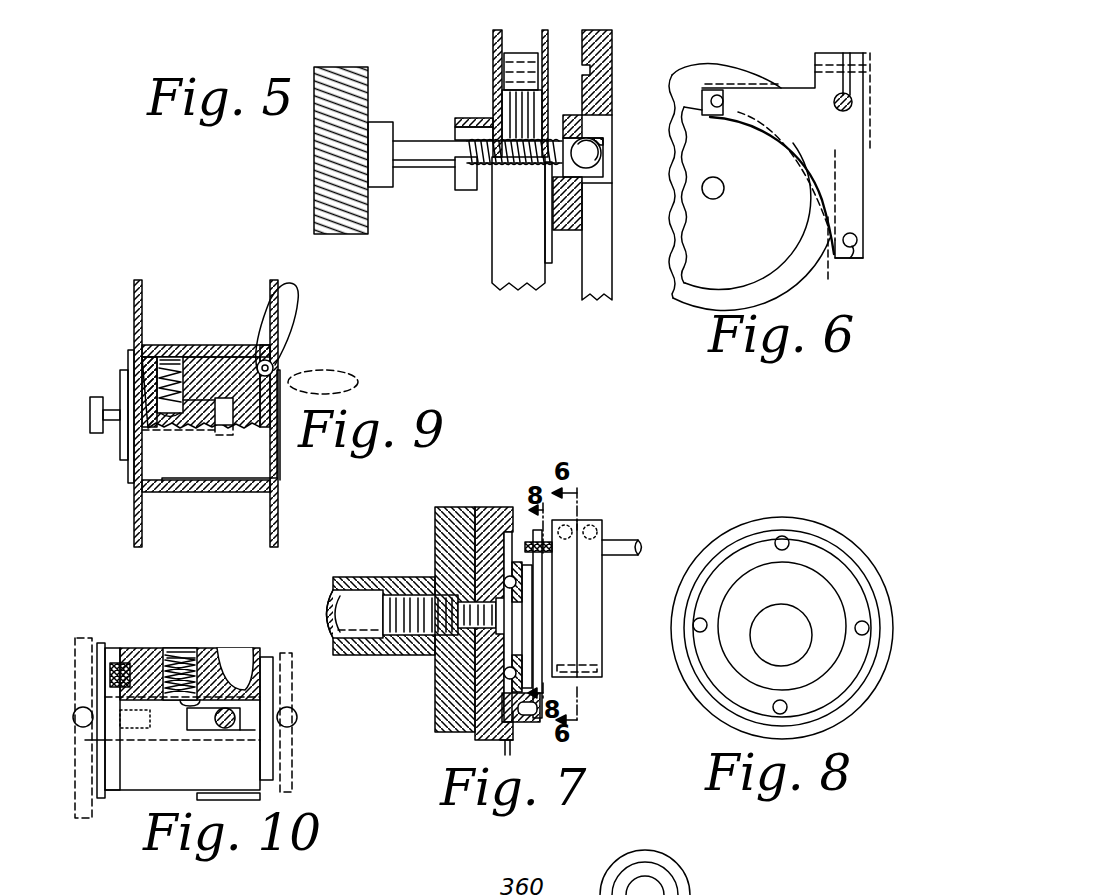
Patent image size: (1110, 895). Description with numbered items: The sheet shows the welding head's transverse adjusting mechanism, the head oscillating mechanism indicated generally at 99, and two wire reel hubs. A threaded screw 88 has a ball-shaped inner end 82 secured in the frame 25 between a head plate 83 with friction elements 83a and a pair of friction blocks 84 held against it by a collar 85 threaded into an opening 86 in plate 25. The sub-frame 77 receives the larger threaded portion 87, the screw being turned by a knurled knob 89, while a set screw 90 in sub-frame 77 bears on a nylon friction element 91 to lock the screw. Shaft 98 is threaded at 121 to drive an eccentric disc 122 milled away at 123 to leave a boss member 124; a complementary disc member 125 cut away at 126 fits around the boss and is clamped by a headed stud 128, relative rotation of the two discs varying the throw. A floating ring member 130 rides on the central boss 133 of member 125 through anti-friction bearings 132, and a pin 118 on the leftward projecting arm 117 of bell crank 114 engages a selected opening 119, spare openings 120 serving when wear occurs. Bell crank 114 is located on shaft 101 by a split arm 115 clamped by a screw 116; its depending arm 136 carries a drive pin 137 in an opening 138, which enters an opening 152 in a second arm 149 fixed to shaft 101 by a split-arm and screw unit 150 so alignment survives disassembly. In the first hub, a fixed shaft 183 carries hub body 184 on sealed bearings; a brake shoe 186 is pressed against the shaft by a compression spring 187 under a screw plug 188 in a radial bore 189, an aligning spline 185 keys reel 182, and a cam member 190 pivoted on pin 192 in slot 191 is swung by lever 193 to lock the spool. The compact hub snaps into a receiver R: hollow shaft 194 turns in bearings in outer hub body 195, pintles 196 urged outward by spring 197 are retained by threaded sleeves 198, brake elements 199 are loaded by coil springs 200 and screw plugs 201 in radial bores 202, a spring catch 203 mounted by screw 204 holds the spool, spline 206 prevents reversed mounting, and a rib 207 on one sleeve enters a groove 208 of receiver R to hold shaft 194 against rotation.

In FIG. 5, the frame 25 is at (605, 232).
In FIG. 5, the sub-frame 77 is at (500, 257).
In FIG. 5, the ball-shaped end 82 is at (602, 153).
In FIG. 5, the head plate 83 is at (598, 167).
In FIG. 5, the friction elements 83a is at (601, 142).
In FIG. 5, the friction blocks 84 is at (574, 120).
In FIG. 5, the collar 85 is at (602, 83).
In FIG. 5, the opening 86 is at (580, 196).
In FIG. 5, the threaded portion 87 is at (459, 132).
In FIG. 5, the threaded screw 88 is at (421, 169).
In FIG. 5, the knurled knob 89 is at (371, 84).
In FIG. 5, the set screw 90 is at (538, 50).
In FIG. 5, the plastic friction element 91 is at (518, 105).
In FIG. 7, the shaft 98 is at (335, 600).
In FIG. 7, the assembly 99 is at (455, 505).
In FIG. 6, the shaft 101 is at (838, 108).
In FIG. 7, the shaft 101 is at (618, 542).
In FIG. 6, the bell crank 114 is at (866, 128).
In FIG. 7, the bell crank 114 is at (570, 614).
In FIG. 6, the split arm 115 is at (864, 88).
In FIG. 6, the screw 116 is at (832, 51).
In FIG. 7, the screw 116 is at (572, 520).
In FIG. 6, the projecting arm 117 is at (775, 88).
In FIG. 6, the pin 118 is at (711, 115).
In FIG. 7, the pin 118 is at (580, 598).
In FIG. 7, the opening 119 is at (520, 531).
In FIG. 8, the opening 119 is at (792, 546).
In FIG. 7, the additional openings 120 is at (536, 710).
In FIG. 8, the additional openings 120 is at (705, 620).
In FIG. 7, the threaded end 121 is at (440, 658).
In FIG. 7, the eccentrically mounted disc 122 is at (435, 522).
In FIG. 7, the milled-away portion 123 is at (483, 541).
In FIG. 7, the boss member 124 is at (488, 572).
In FIG. 7, the complementary disc member 125 is at (496, 738).
In FIG. 7, the cut-away 126 is at (462, 702).
In FIG. 7, the headed threaded stud 128 is at (470, 690).
In FIG. 7, the ring member 130 is at (525, 722).
In FIG. 8, the ring member 130 is at (852, 572).
In FIG. 7, the bearings 132 is at (516, 590).
In FIG. 7, the central boss 133 is at (563, 606).
In FIG. 6, the depending arm 136 is at (840, 260).
In FIG. 7, the depending arm 136 is at (580, 690).
In FIG. 6, the drive pin 137 is at (856, 238).
In FIG. 7, the drive pin 137 is at (602, 669).
In FIG. 6, the opening 138 is at (866, 254).
In FIG. 7, the second arm 149 is at (590, 592).
In FIG. 7, the split-arm and screw unit 150 is at (595, 522).
In FIG. 7, the opening 152 is at (590, 680).
In FIG. 9, the wire reel 182 is at (142, 296).
In FIG. 9, the shaft 183 is at (118, 409).
In FIG. 9, the hub body 184 is at (212, 360).
In FIG. 9, the aligning spline 185 is at (217, 481).
In FIG. 9, the brake shoe 186 is at (185, 420).
In FIG. 9, the compression spring 187 is at (170, 402).
In FIG. 9, the screw plug 188 is at (193, 350).
In FIG. 9, the radial bore 189 is at (146, 355).
In FIG. 9, the cam member 190 is at (274, 365).
In FIG. 9, the slot 191 is at (253, 360).
In FIG. 9, the pin 192 is at (283, 373).
In FIG. 9, the lever 193 is at (296, 318).
In FIG. 10, the hollow shaft 194 is at (128, 660).
In FIG. 10, the outer hub body 195 is at (226, 690).
In FIG. 10, the pintle elements 196 is at (273, 713).
In FIG. 10, the compression spring 197 is at (125, 706).
In FIG. 10, the threaded sleeves 198 is at (292, 752).
In FIG. 10, the friction brake elements 199 is at (175, 708).
In FIG. 10, the coil springs 200 is at (180, 650).
In FIG. 10, the screw plugs 201 is at (190, 650).
In FIG. 10, the radial bores 202 is at (205, 680).
In FIG. 10, the spring catch 203 is at (205, 722).
In FIG. 10, the screw 204 is at (240, 735).
In FIG. 10, the spline 206 is at (240, 797).
In FIG. 10, the rib 207 is at (292, 722).
In FIG. 10, the groove 208 is at (92, 748).
In FIG. 10, the receiver R is at (78, 630).